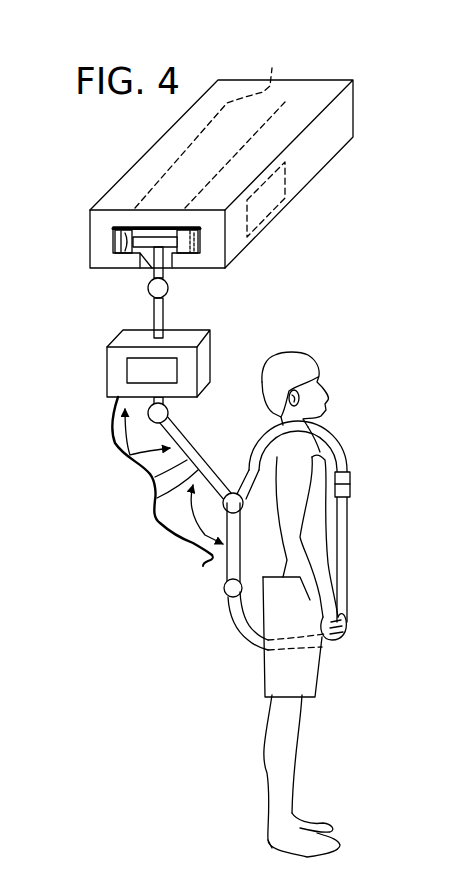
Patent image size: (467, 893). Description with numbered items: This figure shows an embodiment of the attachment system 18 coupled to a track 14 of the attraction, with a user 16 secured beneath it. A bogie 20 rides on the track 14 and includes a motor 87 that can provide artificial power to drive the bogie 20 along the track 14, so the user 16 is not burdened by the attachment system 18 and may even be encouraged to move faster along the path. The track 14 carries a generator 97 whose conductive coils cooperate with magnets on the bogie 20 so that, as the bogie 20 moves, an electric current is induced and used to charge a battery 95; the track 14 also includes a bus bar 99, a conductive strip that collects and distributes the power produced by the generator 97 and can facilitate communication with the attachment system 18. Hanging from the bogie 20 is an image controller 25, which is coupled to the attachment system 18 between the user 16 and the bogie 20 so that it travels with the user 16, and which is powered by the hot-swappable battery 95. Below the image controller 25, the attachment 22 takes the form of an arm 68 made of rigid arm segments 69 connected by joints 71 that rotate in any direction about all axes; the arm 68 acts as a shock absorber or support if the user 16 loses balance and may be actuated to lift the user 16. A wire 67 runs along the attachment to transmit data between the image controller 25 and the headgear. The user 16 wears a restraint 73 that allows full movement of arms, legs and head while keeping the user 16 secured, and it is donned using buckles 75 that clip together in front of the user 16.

The track 14 is at (320, 172).
The user 16 is at (320, 760).
The attachment system 18 is at (171, 549).
The bogie 20 is at (123, 243).
The attachment 22 is at (153, 476).
The image controller 25 is at (153, 358).
The wire 67 is at (153, 518).
The arm 68 is at (106, 431).
The rigid arm segments 69 is at (158, 396).
The joints 71 is at (178, 422).
The restraint 73 is at (306, 508).
The buckles 75 is at (351, 492).
The motor 87 is at (157, 238).
The battery 95 is at (127, 368).
The generator 97 is at (285, 178).
The bus bar 99 is at (208, 125).